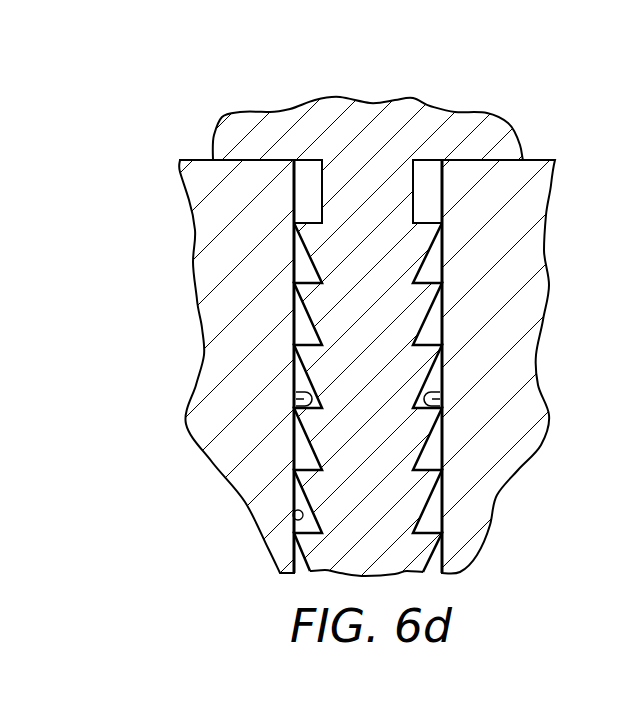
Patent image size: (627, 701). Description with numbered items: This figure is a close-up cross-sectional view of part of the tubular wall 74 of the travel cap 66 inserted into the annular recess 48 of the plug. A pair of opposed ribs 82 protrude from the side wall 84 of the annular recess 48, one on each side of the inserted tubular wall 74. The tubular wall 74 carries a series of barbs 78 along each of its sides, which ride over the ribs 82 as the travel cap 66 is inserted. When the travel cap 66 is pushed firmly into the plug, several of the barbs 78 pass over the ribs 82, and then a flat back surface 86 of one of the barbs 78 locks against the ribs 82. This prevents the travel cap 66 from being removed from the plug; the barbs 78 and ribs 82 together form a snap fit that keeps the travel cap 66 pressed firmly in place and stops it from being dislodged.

The travel cap 66 is at (414, 86).
The tubular wall 74 is at (375, 322).
The barbs 78 is at (425, 357).
The opposed ribs 82 is at (297, 400).
The side wall 84 is at (298, 515).
The flat back surface 86 is at (297, 408).
The annular recess 48 is at (430, 517).